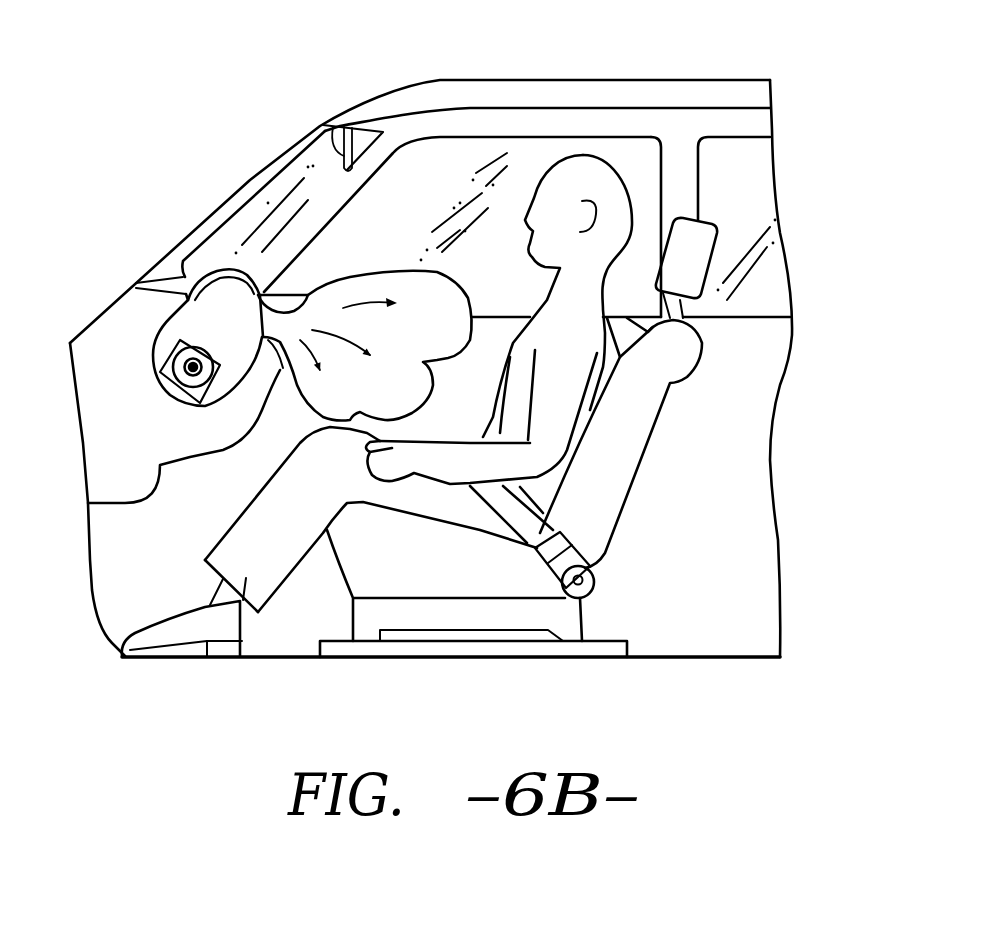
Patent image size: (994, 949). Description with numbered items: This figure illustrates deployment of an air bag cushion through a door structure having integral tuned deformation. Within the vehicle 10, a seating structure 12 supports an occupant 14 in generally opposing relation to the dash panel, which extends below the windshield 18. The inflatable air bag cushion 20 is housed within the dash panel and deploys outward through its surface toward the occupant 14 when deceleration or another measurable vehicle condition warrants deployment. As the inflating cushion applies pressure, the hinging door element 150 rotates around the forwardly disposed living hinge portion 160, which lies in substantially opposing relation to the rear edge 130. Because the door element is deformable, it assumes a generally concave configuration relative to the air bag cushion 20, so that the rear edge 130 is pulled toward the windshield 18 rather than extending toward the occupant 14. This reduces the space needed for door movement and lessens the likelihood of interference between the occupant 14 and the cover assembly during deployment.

The vehicle 10 is at (832, 78).
The seating structure 12 is at (650, 432).
The occupant 14 is at (583, 153).
The windshield 18 is at (250, 205).
The inflatable air bag cushion 20 is at (450, 276).
The rear edge 130 is at (316, 292).
The hinging door element 150 is at (135, 285).
The living hinge portion 160 is at (185, 290).